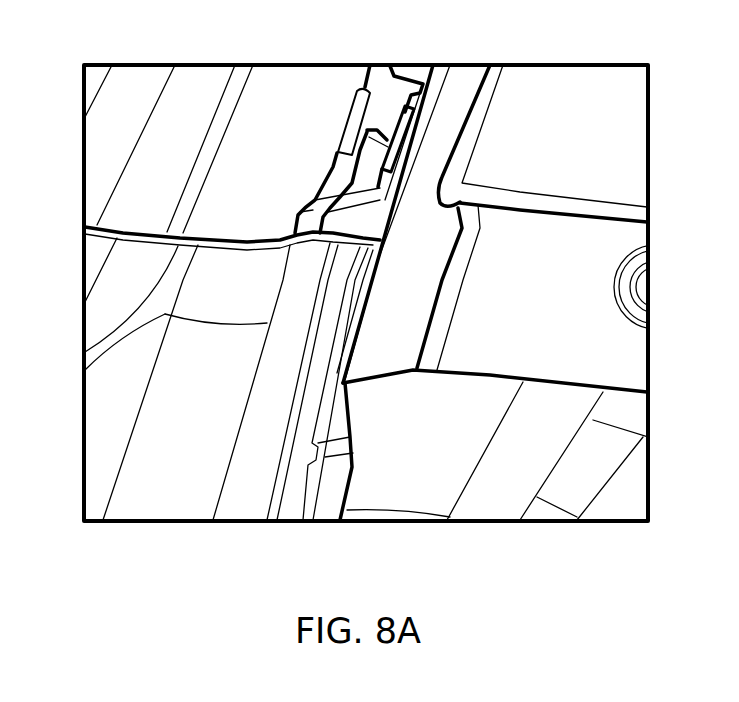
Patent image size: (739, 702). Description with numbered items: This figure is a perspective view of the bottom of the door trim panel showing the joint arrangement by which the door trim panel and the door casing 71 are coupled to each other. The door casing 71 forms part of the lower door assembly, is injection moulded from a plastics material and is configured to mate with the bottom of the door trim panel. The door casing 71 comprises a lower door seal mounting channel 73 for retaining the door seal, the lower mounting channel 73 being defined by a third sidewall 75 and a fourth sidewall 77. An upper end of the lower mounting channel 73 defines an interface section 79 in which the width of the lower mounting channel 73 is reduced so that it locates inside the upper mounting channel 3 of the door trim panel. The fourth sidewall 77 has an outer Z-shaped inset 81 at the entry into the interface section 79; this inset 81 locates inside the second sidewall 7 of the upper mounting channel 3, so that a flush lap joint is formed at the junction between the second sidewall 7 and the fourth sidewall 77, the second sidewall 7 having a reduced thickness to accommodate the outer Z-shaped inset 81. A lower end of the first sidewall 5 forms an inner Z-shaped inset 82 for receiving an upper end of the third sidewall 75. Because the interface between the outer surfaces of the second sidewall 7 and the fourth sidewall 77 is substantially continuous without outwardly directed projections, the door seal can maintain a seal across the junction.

The upper mounting channel 3 is at (403, 82).
The first sidewall 5 is at (303, 225).
The second sidewall 7 is at (425, 255).
The door casing 71 is at (255, 455).
The lower door seal mounting channel 73 is at (290, 502).
The third sidewall 75 is at (265, 398).
The fourth sidewall 77 is at (330, 508).
The interface section 79 is at (343, 413).
The outer Z-shaped inset 81 is at (337, 453).
The inner Z-shaped inset 82 is at (317, 200).